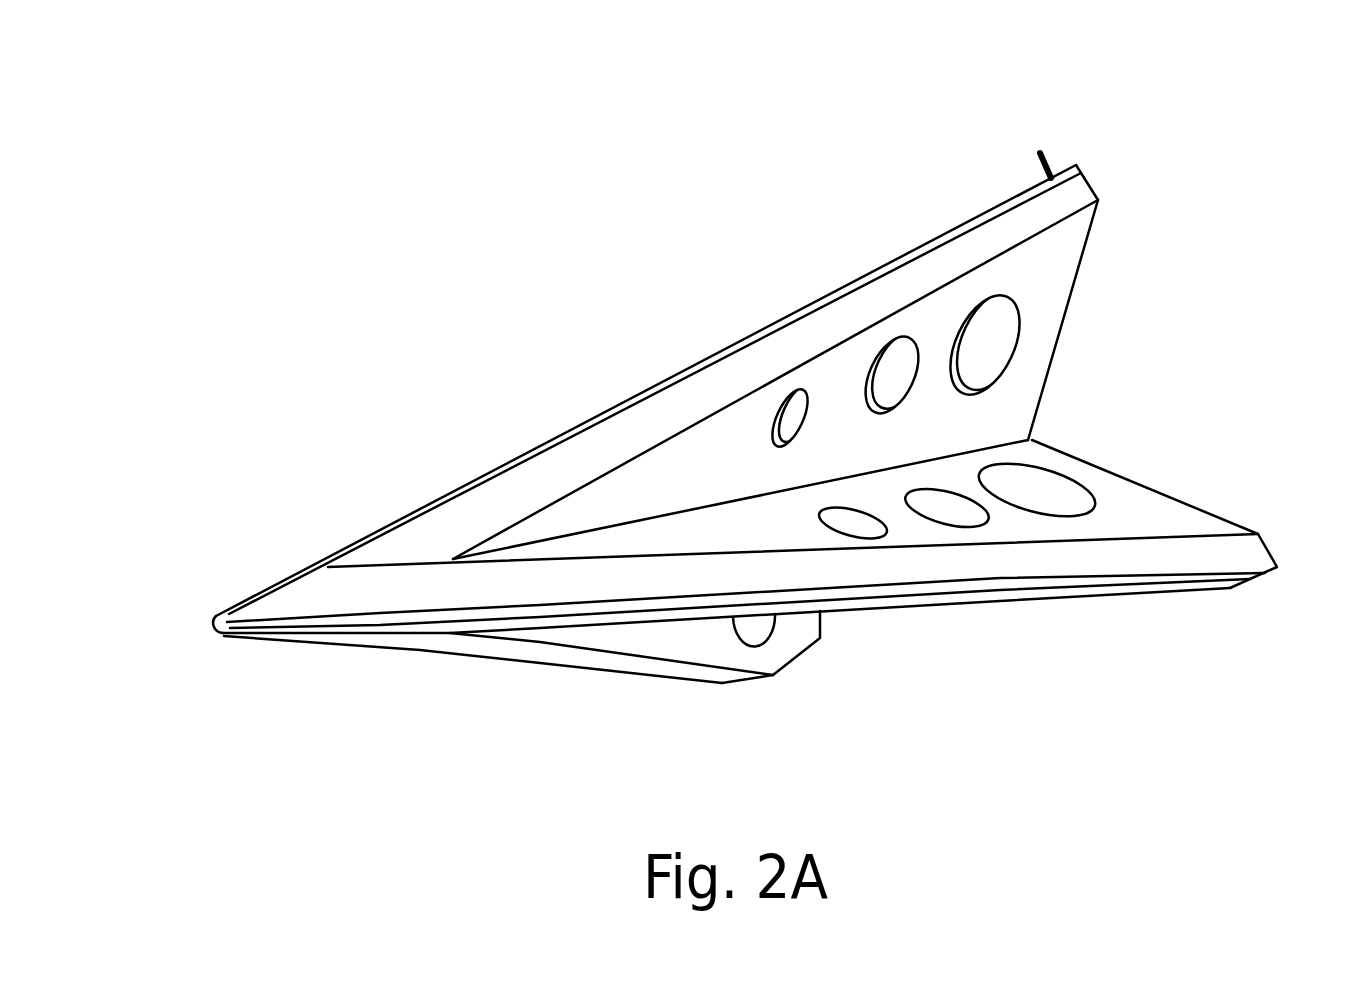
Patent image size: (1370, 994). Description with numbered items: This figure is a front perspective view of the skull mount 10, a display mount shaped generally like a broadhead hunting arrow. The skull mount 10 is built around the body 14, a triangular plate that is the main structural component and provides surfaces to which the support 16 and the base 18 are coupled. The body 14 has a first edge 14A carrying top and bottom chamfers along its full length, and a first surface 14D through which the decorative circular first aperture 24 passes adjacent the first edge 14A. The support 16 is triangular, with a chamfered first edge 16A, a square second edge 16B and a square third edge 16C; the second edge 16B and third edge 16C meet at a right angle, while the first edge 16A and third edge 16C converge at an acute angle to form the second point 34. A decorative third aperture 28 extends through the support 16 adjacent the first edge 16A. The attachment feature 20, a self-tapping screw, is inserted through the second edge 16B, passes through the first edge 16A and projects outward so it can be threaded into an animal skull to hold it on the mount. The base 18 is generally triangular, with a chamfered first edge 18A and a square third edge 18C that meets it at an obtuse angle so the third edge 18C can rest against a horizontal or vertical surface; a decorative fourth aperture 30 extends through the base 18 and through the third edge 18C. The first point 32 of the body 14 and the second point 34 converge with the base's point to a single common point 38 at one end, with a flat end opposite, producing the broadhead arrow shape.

The skull mount 10 is at (487, 285).
The body 14 is at (1125, 462).
The first edge 14A is at (1172, 575).
The first surface 14D is at (1148, 510).
The support 16 is at (1045, 270).
The first edge 16A is at (965, 222).
The second edge 16B is at (1062, 343).
The third edge 16C is at (943, 452).
The base 18 is at (698, 650).
The first edge 18A is at (538, 665).
The third edge 18C is at (745, 683).
The attachment feature 20 is at (1043, 150).
The first aperture 24 is at (950, 515).
The third aperture 28 is at (885, 375).
The fourth aperture 30 is at (843, 627).
The first point 32 is at (232, 607).
The second point 34 is at (348, 538).
The common point 38 is at (225, 638).